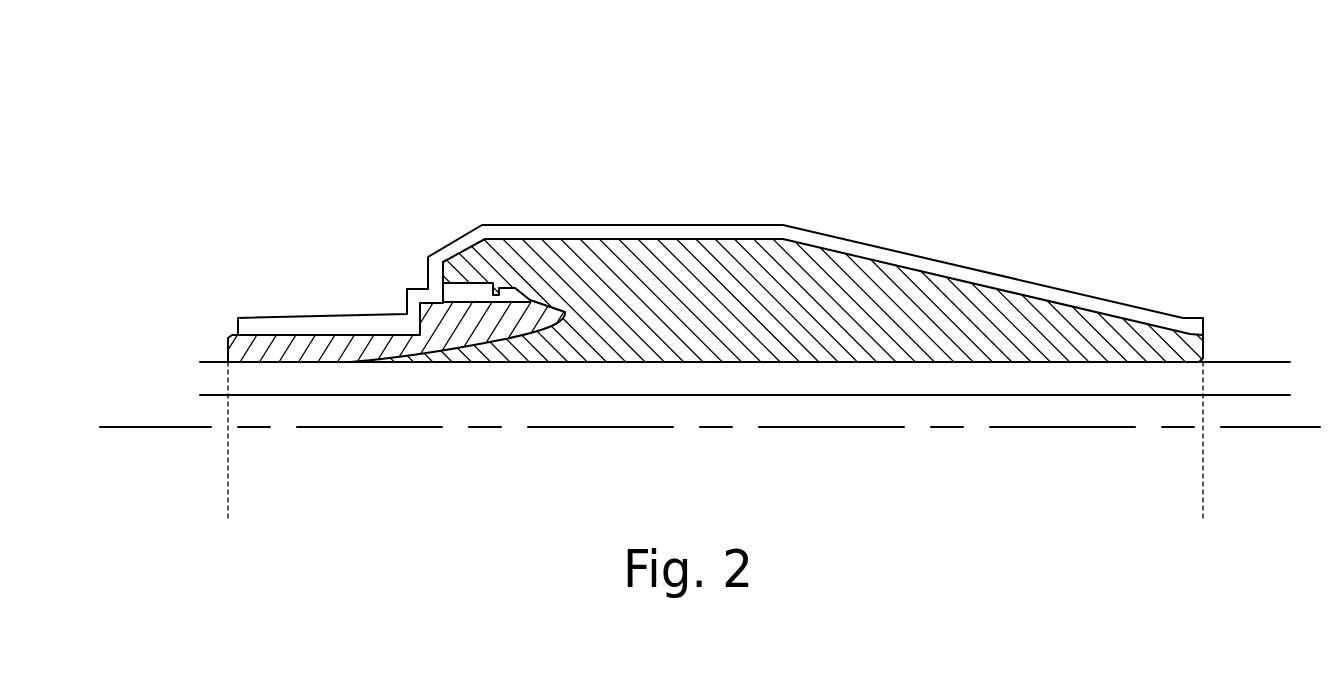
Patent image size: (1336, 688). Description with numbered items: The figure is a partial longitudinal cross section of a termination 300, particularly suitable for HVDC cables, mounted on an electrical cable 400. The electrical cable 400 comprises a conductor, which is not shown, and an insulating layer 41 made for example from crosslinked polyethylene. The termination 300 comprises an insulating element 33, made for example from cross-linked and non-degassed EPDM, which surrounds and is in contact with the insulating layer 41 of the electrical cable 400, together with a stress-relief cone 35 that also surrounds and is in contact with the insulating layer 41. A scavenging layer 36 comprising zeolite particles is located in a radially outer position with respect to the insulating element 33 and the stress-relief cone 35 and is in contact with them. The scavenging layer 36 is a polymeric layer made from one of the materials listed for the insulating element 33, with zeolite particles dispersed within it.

The termination 300 is at (457, 162).
The insulating element 33 is at (607, 283).
The stress-relief cone 35 is at (308, 350).
The scavenging layer 36 is at (928, 257).
The insulating layer 41 is at (380, 381).
The electrical cable 400 is at (775, 427).